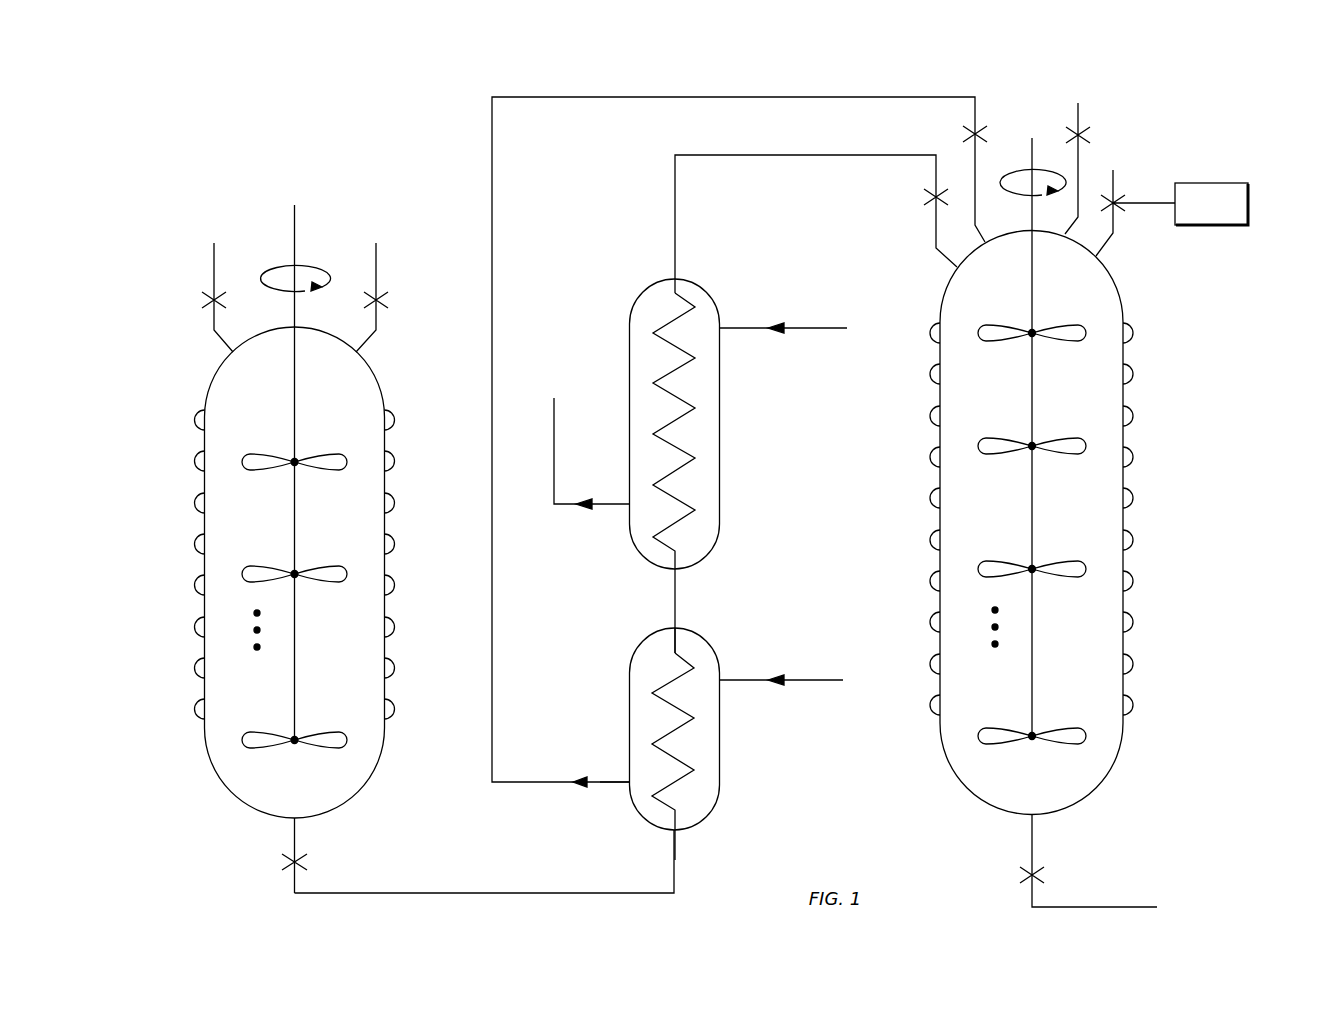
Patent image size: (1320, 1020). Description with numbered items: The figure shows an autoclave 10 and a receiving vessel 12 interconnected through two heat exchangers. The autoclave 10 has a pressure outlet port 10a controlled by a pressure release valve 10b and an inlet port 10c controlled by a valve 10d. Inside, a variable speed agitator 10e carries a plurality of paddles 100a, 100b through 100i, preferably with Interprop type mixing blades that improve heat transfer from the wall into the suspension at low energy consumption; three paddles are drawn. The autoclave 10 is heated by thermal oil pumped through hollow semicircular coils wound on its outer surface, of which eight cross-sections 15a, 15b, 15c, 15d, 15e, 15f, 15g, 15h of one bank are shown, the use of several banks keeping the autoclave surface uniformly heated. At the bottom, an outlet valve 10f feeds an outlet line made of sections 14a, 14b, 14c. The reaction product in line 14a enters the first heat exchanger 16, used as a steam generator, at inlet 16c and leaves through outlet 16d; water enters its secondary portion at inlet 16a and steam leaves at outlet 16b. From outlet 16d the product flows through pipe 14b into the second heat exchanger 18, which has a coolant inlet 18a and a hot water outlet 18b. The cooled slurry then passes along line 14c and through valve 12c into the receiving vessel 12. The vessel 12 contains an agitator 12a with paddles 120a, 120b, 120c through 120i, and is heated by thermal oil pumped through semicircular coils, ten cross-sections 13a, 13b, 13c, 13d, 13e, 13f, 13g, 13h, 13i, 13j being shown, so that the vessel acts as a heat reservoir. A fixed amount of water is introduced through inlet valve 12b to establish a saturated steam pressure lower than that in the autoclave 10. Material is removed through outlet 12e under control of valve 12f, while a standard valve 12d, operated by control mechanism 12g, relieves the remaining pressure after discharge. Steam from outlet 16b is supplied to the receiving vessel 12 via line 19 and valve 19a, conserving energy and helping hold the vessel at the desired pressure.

The autoclave 10 is at (212, 382).
The pressure outlet port 10a is at (376, 255).
The pressure release valve 10b is at (388, 300).
The inlet port 10c is at (214, 255).
The valve 10d is at (202, 300).
The agitator 10e is at (297, 218).
The outlet valve 10f is at (284, 864).
The paddle 100a is at (260, 452).
The paddle 100b is at (260, 565).
The paddle 100i is at (260, 731).
The heating coil cross-section 15a is at (194, 420).
The heating coil cross-section 15b is at (194, 463).
The heating coil cross-section 15c is at (194, 505).
The heating coil cross-section 15d is at (194, 546).
The heating coil cross-section 15e is at (194, 587).
The heating coil cross-section 15f is at (194, 629).
The heating coil cross-section 15g is at (194, 670).
The heating coil cross-section 15h is at (194, 711).
The outlet line section 14a is at (420, 893).
The pipe 14b is at (676, 592).
The line 14c is at (675, 232).
The line 19 is at (492, 312).
The valve 19a is at (965, 134).
The heat exchanger 18 is at (720, 440).
The coolant inlet 18a is at (736, 326).
The hot water outlet 18b is at (601, 502).
The heat exchanger 16 is at (720, 748).
The inlet 16a is at (735, 678).
The outlet 16b is at (600, 780).
The inlet 16c is at (678, 832).
The outlet 16d is at (672, 627).
The receiving vessel 12 is at (1106, 290).
The agitator 12a is at (1032, 150).
The inlet valve 12b is at (1090, 134).
The valve 12c is at (926, 197).
The valve 12d is at (1122, 200).
The outlet 12e is at (1034, 833).
The valve 12f is at (1044, 875).
The control mechanism 12g is at (1249, 212).
The paddle 120a is at (997, 324).
The paddle 120b is at (997, 437).
The paddle 120c is at (997, 560).
The paddle 120i is at (997, 727).
The heating coil cross-section 13a is at (1133, 333).
The heating coil cross-section 13b is at (1133, 374).
The heating coil cross-section 13c is at (1133, 416).
The heating coil cross-section 13d is at (1133, 457).
The heating coil cross-section 13e is at (1133, 498).
The heating coil cross-section 13f is at (1133, 540).
The heating coil cross-section 13g is at (1133, 581).
The heating coil cross-section 13h is at (1133, 622).
The heating coil cross-section 13i is at (1133, 664).
The heating coil cross-section 13j is at (1133, 705).